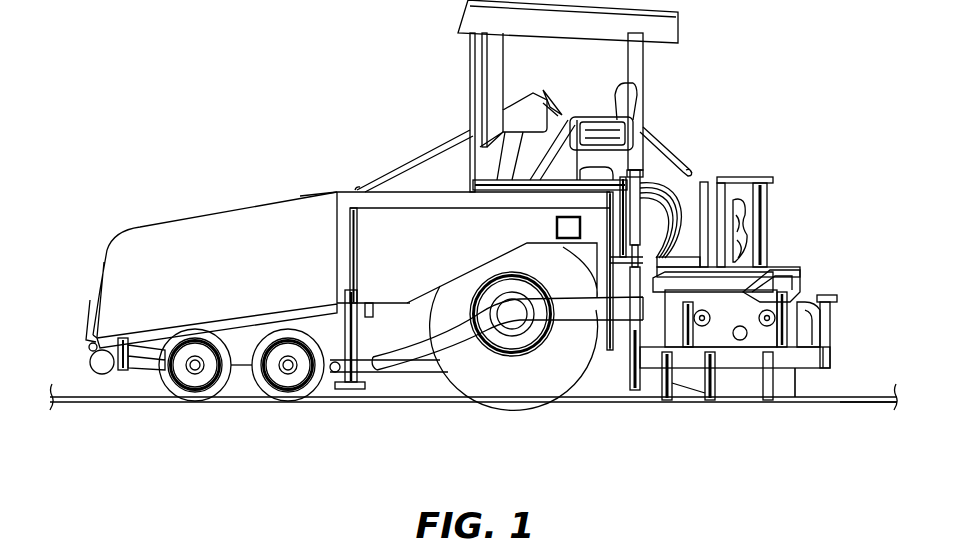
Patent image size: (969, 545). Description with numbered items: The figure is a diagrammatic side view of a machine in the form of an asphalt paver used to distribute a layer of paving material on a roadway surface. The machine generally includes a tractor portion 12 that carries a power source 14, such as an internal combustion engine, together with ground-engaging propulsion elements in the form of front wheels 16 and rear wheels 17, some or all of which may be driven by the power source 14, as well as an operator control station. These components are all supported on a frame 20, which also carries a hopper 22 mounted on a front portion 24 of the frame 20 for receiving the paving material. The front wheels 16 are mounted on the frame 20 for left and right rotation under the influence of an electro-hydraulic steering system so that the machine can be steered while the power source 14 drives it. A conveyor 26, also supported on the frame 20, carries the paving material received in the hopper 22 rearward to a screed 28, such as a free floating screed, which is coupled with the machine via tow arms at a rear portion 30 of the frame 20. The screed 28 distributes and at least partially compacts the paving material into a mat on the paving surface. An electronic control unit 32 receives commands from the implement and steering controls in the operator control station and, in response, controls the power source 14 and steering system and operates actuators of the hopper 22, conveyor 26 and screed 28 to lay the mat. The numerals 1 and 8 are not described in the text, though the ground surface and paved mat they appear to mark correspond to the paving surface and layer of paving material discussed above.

The paving mat 1 is at (857, 395).
The ground surface 8 is at (880, 403).
The tractor portion 12 is at (348, 157).
The power source 14 is at (277, 197).
The front wheels 16 is at (255, 387).
The rear wheels 17 is at (468, 392).
The frame 20 is at (378, 356).
The hopper 22 is at (190, 211).
The front portion 24 is at (187, 163).
The conveyor 26 is at (88, 328).
The screed 28 is at (787, 266).
The rear portion 30 is at (703, 162).
The electronic control unit 32 is at (580, 225).